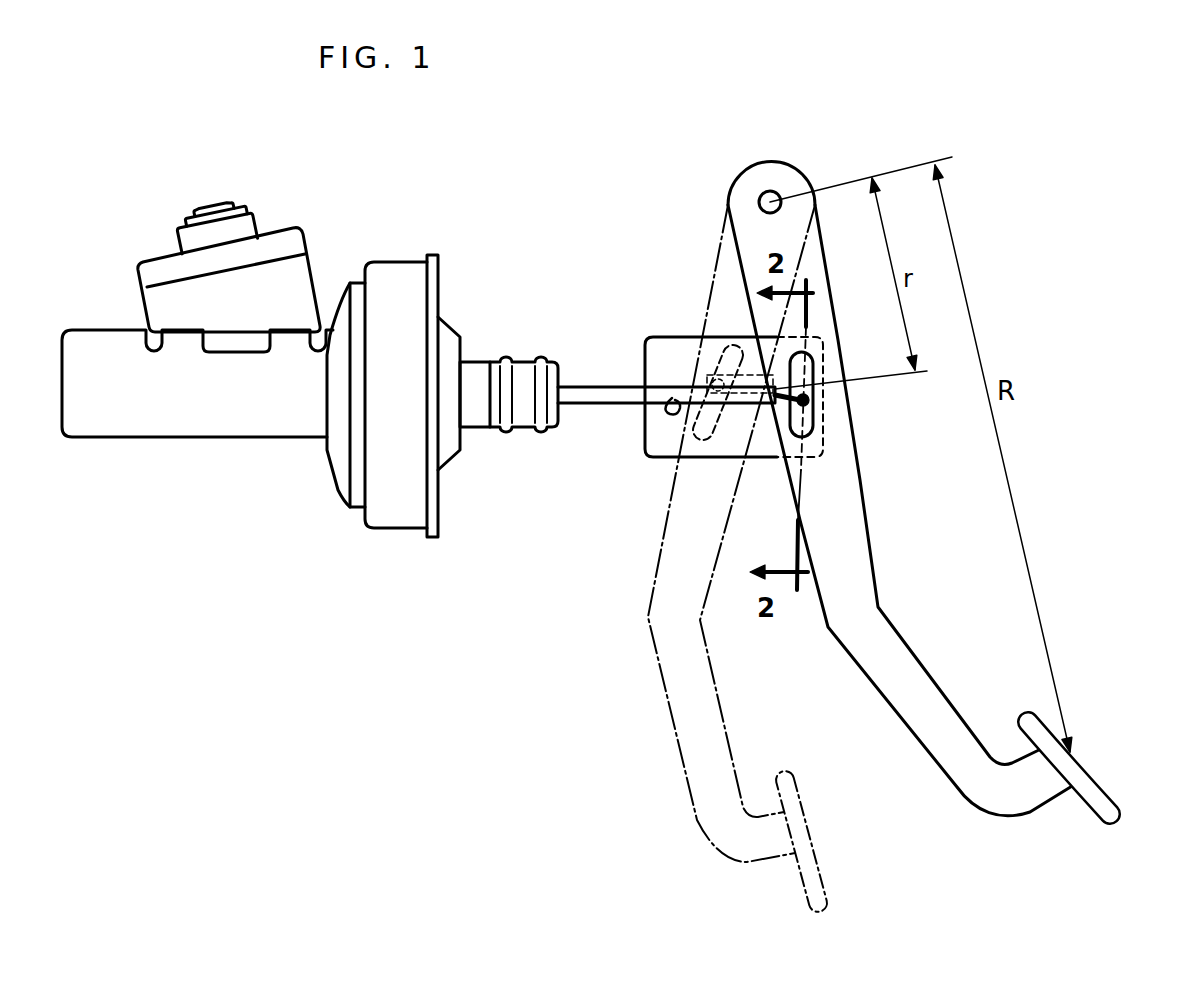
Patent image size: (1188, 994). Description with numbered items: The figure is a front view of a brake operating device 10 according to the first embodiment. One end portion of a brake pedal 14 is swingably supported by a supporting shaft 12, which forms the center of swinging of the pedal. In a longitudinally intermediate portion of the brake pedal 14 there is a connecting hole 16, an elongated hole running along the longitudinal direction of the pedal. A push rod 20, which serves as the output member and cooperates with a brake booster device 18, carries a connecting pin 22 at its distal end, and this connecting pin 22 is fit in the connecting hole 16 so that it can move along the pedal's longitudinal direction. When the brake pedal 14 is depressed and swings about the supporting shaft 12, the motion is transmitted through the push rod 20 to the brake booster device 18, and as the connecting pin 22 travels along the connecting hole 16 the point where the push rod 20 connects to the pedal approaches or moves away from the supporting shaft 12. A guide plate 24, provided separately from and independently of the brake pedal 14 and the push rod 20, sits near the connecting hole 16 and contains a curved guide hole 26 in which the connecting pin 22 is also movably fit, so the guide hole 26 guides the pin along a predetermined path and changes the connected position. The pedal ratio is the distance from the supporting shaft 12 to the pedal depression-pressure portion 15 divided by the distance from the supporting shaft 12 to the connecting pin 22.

The brake operating device 10 is at (567, 237).
The supporting shaft 12 is at (762, 195).
The brake pedal 14 is at (875, 562).
The pedal depression-pressure portion 15 is at (1093, 760).
The connecting hole 16 is at (731, 351).
The brake booster device 18 is at (407, 250).
The push rod 20 is at (600, 387).
The connecting pin 22 is at (717, 382).
The guide plate 24 is at (645, 450).
The guide hole 26 is at (662, 410).